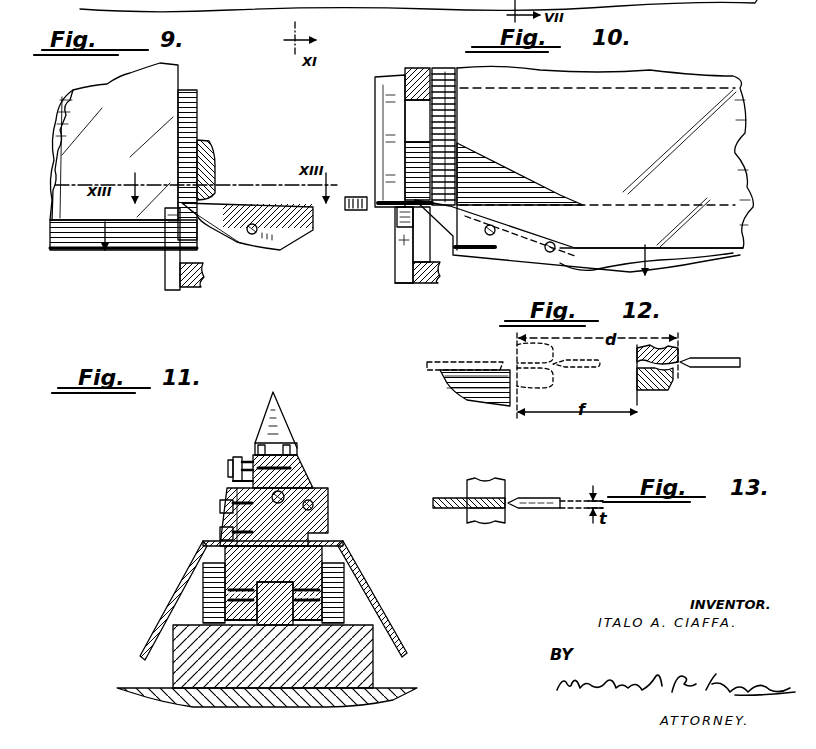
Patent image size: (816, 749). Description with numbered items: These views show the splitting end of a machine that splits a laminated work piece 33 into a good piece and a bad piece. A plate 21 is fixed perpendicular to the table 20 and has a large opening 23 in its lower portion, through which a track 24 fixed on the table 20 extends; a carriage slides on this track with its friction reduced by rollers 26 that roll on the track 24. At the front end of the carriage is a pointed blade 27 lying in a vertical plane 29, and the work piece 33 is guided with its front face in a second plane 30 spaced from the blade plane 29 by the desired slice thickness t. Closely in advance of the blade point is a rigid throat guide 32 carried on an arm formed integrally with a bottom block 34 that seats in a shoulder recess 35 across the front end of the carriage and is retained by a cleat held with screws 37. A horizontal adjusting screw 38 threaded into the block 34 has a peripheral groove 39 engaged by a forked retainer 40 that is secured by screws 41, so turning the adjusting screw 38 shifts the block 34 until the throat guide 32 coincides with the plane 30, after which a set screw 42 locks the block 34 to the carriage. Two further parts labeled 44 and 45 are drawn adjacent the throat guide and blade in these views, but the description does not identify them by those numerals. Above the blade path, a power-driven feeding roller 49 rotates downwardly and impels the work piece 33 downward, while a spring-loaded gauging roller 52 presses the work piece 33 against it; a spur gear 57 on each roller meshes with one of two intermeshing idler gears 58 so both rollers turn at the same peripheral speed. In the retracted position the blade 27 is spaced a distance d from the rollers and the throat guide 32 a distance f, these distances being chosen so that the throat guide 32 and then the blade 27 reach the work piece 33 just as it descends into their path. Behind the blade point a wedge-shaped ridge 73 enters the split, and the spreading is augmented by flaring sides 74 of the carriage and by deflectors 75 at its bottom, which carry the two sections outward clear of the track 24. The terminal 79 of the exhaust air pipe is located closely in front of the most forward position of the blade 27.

In FIG. 11, the table 20 is at (333, 703).
In FIG. 10, the plate 21 is at (421, 72).
In FIG. 10, the opening 23 is at (417, 117).
In FIG. 11, the track 24 is at (180, 665).
In FIG. 11, the rollers 26 is at (207, 608).
In FIG. 9, the blade 27 is at (222, 233).
In FIG. 10, the blade 27 is at (398, 215).
In FIG. 12, the blade 27 is at (573, 368).
In FIG. 13, the blade 27 is at (530, 510).
In FIG. 13, the plane of the blade 29 is at (572, 500).
In FIG. 13, the plane of the guide plate 30 is at (582, 512).
In FIG. 12, the rigid throat guide 32 is at (535, 385).
In FIG. 13, the rigid throat guide 32 is at (482, 517).
In FIG. 9, the work piece 33 is at (173, 81).
In FIG. 10, the work piece 33 is at (730, 162).
In FIG. 12, the work piece 33 is at (452, 362).
In FIG. 13, the work piece 33 is at (452, 498).
In FIG. 10, the bottom block 34 is at (443, 263).
In FIG. 11, the bottom block 34 is at (307, 460).
In FIG. 11, the shoulder recess 35 is at (313, 492).
In FIG. 11, the screws 37 is at (323, 493).
In FIG. 11, the adjusting screw 38 is at (245, 457).
In FIG. 11, the peripheral groove 39 is at (230, 461).
In FIG. 11, the forked retainer 40 is at (230, 485).
In FIG. 11, the screws 41 is at (225, 530).
In FIG. 11, the set screw 42 is at (290, 442).
In FIG. 9, the guide member 44 is at (177, 212).
In FIG. 10, the guide member 44 is at (398, 230).
In FIG. 12, the guide member 44 is at (517, 352).
In FIG. 13, the guide member 44 is at (492, 480).
In FIG. 9, the support bracket 45 is at (173, 283).
In FIG. 10, the support bracket 45 is at (401, 280).
In FIG. 12, the feeding drum or roller 49 is at (464, 387).
In FIG. 9, the gauging roller 52 is at (62, 110).
In FIG. 10, the spur gear 57 is at (447, 123).
In FIG. 10, the idler gears 58 is at (440, 68).
In FIG. 9, the wedge-shaped ridge 73 is at (265, 205).
In FIG. 10, the wedge-shaped ridge 73 is at (548, 217).
In FIG. 11, the wedge-shaped ridge 73 is at (278, 403).
In FIG. 11, the downwardly outwardly flaring sides 74 is at (227, 492).
In FIG. 11, the deflectors 75 is at (190, 583).
In FIG. 10, the pipe terminal 79 is at (362, 195).